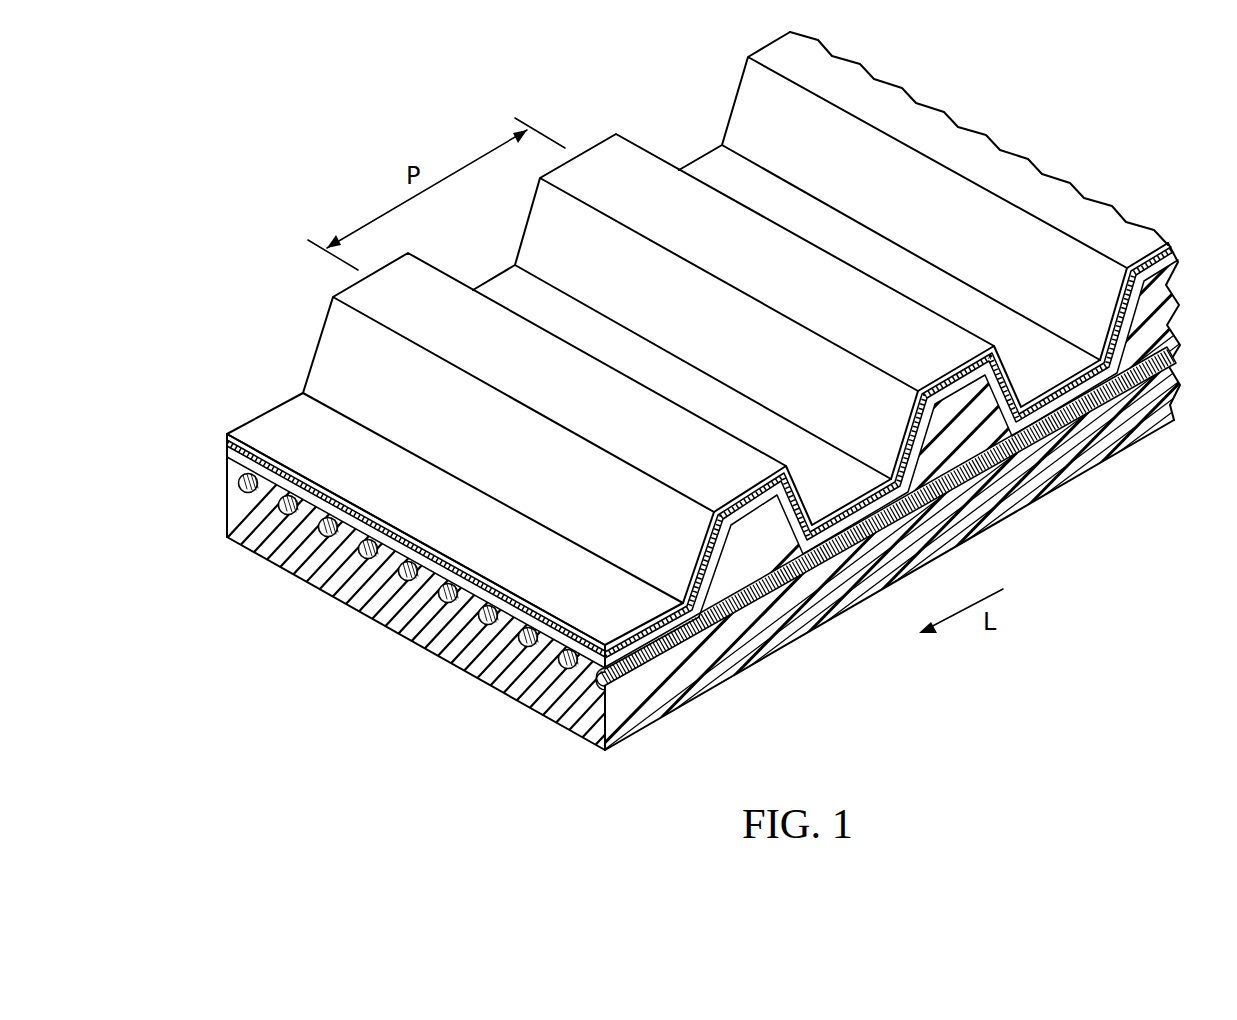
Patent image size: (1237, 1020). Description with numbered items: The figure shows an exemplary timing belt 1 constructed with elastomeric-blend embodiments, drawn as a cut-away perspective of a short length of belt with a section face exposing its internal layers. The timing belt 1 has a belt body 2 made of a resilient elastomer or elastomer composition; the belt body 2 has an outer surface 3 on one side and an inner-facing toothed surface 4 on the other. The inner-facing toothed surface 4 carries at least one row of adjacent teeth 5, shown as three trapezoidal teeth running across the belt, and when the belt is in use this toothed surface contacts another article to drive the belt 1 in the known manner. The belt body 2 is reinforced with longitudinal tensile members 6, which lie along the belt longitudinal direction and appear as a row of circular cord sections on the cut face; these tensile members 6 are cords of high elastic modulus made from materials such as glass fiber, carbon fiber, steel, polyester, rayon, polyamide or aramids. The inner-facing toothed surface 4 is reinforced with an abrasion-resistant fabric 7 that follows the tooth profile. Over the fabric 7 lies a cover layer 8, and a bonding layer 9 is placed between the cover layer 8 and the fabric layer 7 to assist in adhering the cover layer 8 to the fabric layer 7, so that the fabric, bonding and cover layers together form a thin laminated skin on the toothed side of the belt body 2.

The timing belt 1 is at (316, 128).
The belt body 2 is at (227, 505).
The outer surface 3 is at (726, 677).
The inner-facing toothed surface 4 is at (334, 296).
The teeth 5 is at (633, 165).
The longitudinal tensile members 6 is at (370, 562).
The abrasion-resistant fabric 7 is at (1162, 271).
The cover layer 8 is at (1152, 243).
The bonding layer 9 is at (1168, 259).